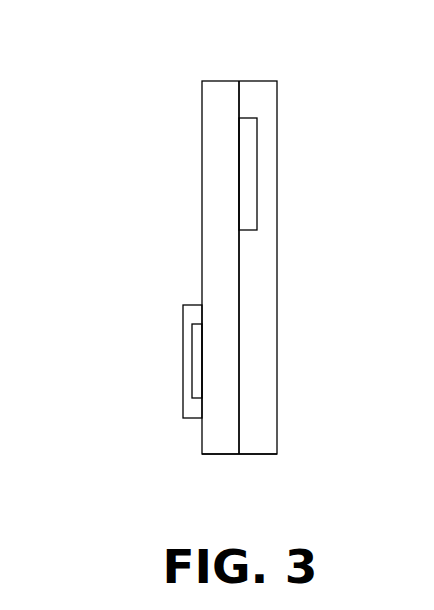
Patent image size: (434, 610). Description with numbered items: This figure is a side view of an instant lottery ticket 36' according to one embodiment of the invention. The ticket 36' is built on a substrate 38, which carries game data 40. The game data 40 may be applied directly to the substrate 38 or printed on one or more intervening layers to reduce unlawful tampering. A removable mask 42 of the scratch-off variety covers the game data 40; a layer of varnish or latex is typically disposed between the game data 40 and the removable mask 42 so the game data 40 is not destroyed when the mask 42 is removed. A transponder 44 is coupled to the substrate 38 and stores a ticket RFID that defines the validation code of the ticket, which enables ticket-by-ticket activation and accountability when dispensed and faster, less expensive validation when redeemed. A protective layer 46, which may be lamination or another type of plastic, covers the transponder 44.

The ticket 36' is at (239, 233).
The substrate 38 is at (222, 455).
The game data 40 is at (196, 343).
The removable mask 42 is at (193, 408).
The transponder 44 is at (248, 157).
The protective layer 46 is at (257, 305).